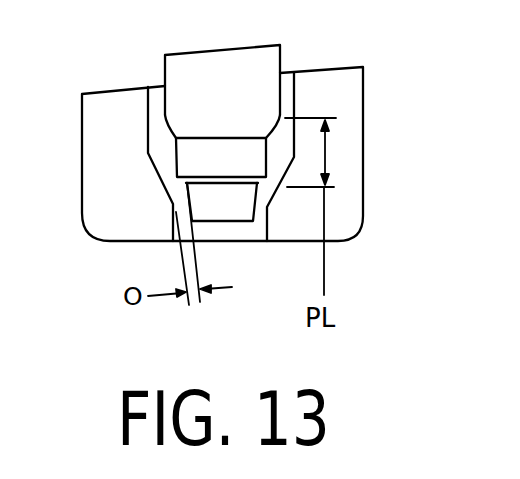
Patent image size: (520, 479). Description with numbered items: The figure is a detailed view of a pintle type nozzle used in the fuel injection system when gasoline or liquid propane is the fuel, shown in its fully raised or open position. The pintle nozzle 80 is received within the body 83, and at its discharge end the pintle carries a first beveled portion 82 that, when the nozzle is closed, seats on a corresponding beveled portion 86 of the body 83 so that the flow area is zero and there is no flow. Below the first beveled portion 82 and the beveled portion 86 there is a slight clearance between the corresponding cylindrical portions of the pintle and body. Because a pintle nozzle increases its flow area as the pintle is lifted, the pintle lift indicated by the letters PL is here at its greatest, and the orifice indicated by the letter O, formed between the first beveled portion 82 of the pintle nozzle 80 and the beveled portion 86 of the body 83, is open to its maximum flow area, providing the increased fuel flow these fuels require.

The pintle nozzle 80 is at (288, 58).
The first beveled portion 82 is at (170, 128).
The body 83 is at (342, 98).
The beveled portion 86 is at (160, 172).